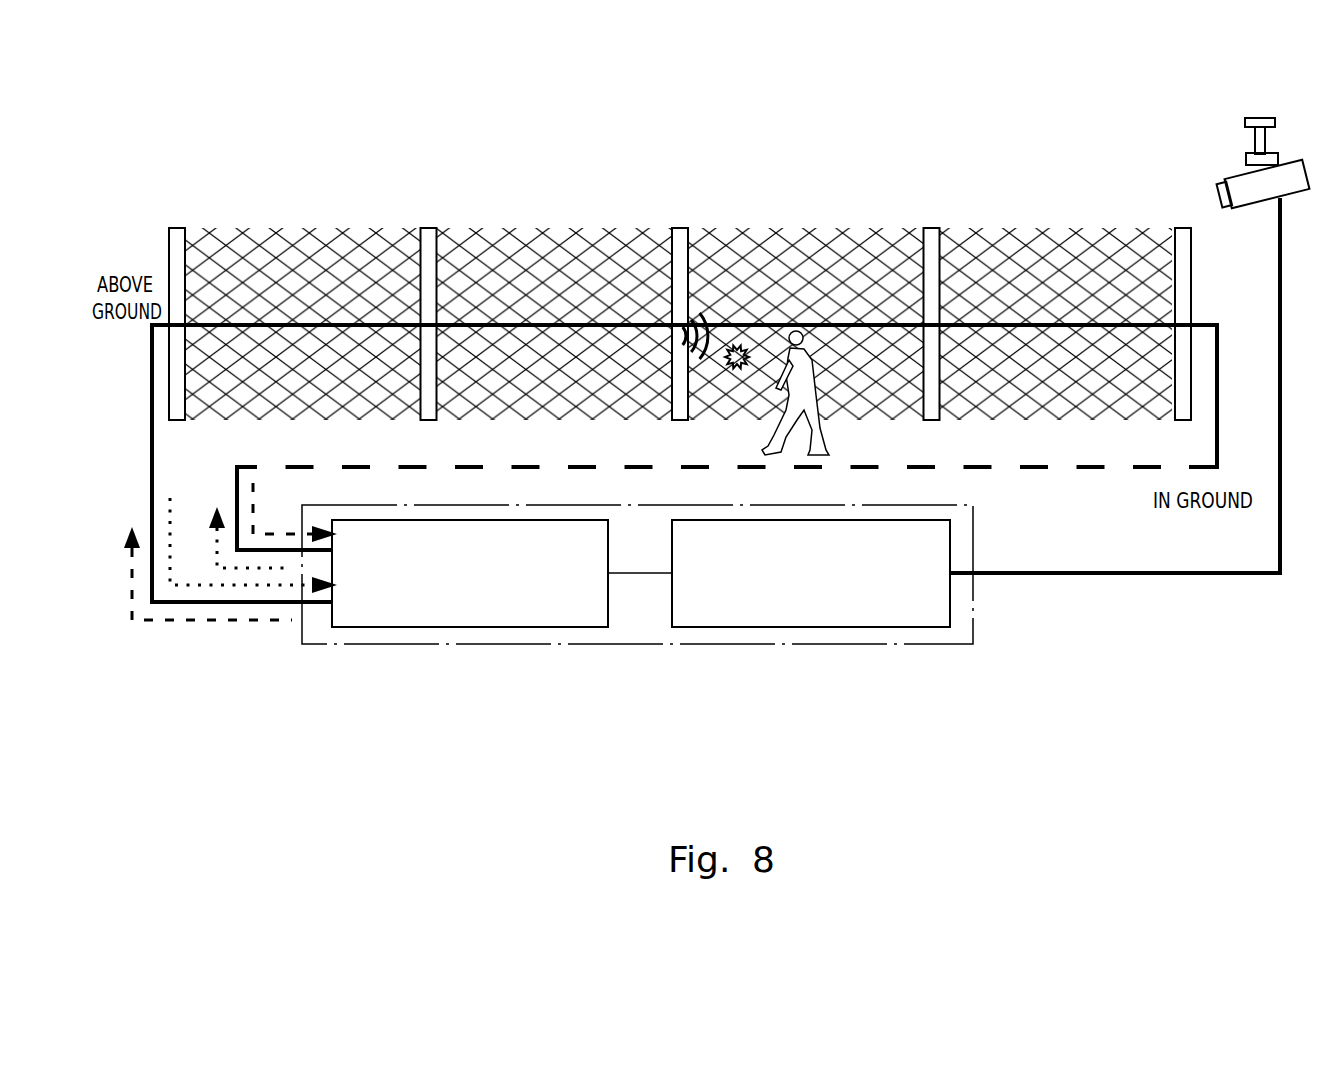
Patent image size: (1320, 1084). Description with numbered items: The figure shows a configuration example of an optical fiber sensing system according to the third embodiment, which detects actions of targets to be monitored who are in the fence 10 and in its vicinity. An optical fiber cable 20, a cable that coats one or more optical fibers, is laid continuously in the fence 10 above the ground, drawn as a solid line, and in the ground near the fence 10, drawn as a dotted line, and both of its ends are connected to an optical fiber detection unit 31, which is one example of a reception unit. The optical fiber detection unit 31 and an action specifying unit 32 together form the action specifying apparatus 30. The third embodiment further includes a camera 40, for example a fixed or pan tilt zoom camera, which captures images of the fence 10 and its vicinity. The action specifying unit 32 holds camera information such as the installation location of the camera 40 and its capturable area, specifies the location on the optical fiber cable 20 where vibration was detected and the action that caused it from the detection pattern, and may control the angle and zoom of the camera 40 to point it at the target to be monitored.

The fence 10 is at (221, 228).
The optical fiber cable 20 is at (151, 412).
The action specifying apparatus 30 is at (975, 612).
The optical fiber detection unit 31 is at (565, 628).
The action specifying unit 32 is at (918, 628).
The camera 40 is at (1232, 174).